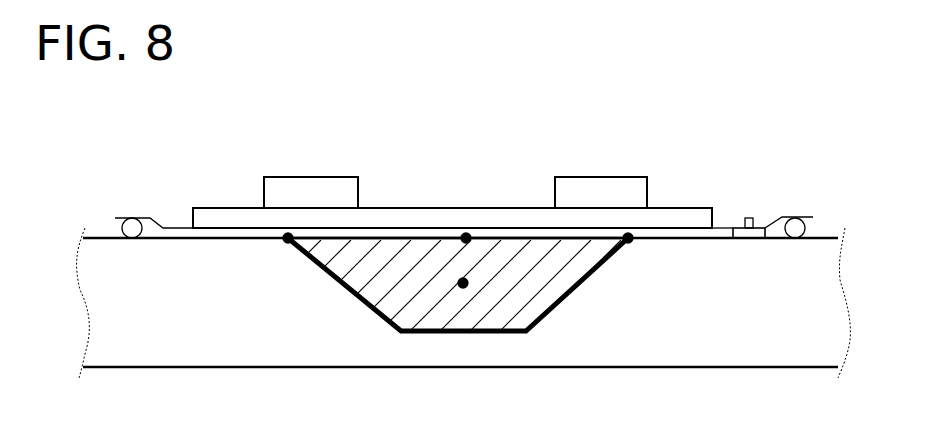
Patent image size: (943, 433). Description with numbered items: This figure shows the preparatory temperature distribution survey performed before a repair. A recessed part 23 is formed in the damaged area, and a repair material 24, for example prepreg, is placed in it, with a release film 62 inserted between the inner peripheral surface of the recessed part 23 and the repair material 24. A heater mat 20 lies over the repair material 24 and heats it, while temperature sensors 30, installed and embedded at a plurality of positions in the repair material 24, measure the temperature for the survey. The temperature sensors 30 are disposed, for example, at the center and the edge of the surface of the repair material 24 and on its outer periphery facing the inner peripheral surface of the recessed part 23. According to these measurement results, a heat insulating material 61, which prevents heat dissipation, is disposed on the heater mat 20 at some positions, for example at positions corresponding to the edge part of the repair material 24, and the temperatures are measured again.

The heater mat 20 is at (385, 208).
The recessed part 23 is at (571, 285).
The repair material 24 is at (507, 238).
The temperature sensors 30 is at (288, 238).
The heat insulating material 61 is at (297, 177).
The release film 62 is at (345, 296).